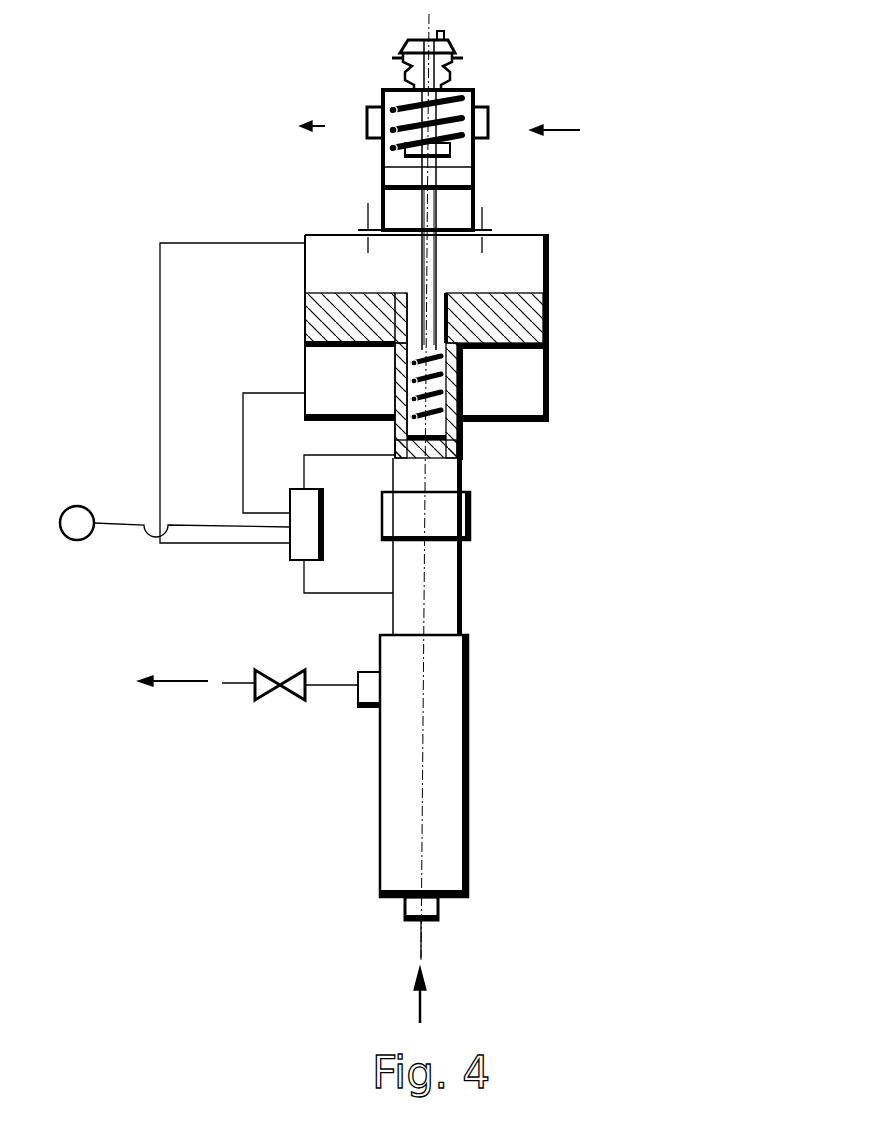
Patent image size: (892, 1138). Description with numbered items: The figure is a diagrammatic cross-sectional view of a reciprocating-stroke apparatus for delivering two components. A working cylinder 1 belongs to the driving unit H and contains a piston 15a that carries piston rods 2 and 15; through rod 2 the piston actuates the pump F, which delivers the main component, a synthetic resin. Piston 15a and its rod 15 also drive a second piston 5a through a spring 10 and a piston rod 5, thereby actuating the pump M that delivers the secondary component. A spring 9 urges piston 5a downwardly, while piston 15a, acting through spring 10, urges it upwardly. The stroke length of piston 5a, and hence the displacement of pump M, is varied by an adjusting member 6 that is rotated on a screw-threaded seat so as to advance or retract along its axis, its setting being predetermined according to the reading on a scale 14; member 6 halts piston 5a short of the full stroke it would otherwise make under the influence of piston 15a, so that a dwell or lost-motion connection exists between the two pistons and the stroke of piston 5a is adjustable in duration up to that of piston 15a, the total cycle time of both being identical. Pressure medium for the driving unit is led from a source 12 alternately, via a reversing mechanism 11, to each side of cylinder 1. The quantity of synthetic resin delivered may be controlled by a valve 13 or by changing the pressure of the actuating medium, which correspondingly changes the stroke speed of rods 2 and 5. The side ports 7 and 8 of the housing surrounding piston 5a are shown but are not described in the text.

The working cylinder 1 is at (478, 328).
The piston rod 2 is at (445, 585).
The piston rod 5 is at (421, 262).
The piston 5a is at (455, 180).
The adjusting member 6 is at (444, 34).
The inlet port block 7 is at (480, 124).
The outlet port block 8 is at (380, 124).
The spring 9 is at (392, 150).
The spring 10 is at (415, 413).
The reversing mechanism 11 is at (297, 545).
The source of pressure medium 12 is at (68, 540).
The valve 13 is at (270, 697).
The scale 14 is at (400, 57).
The piston rod 15 is at (458, 455).
The piston 15a is at (528, 325).
The driving unit H is at (533, 392).
The pump M is at (478, 224).
The pump F is at (445, 766).